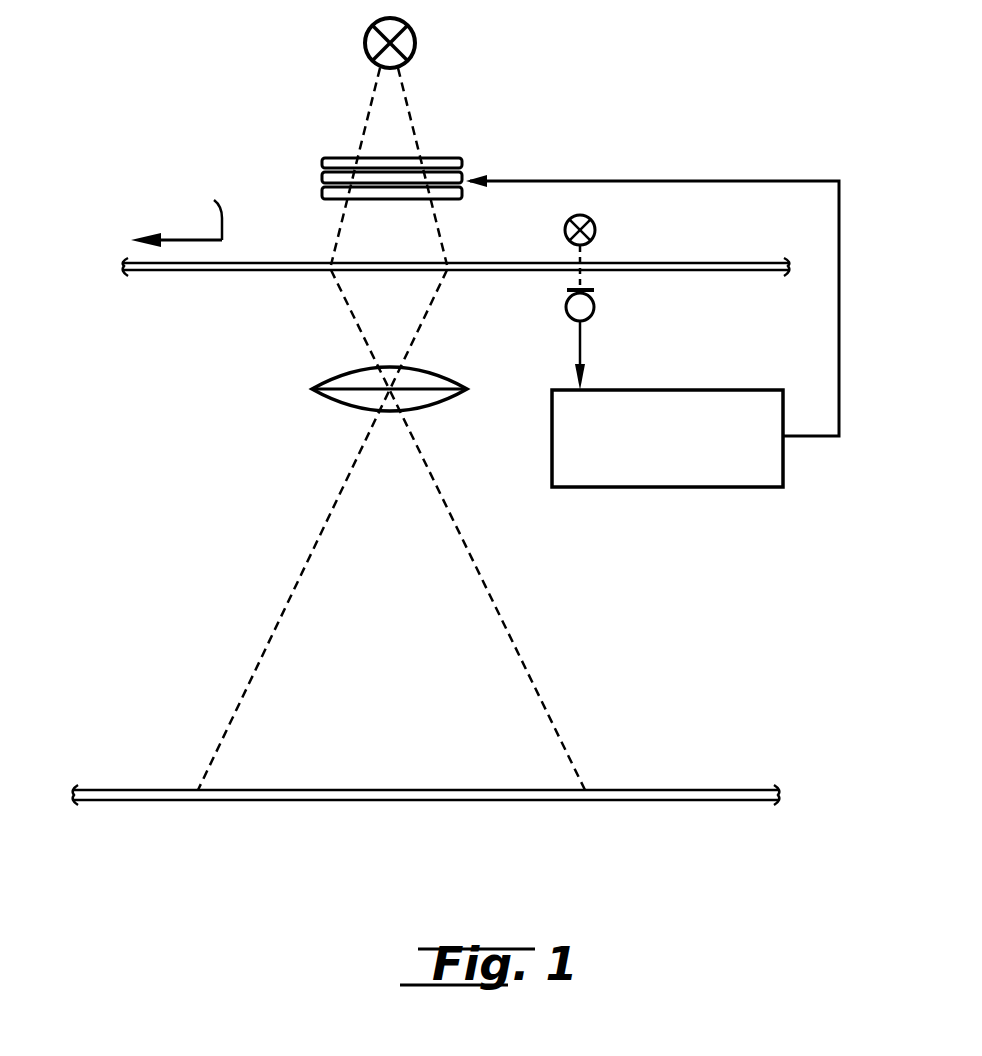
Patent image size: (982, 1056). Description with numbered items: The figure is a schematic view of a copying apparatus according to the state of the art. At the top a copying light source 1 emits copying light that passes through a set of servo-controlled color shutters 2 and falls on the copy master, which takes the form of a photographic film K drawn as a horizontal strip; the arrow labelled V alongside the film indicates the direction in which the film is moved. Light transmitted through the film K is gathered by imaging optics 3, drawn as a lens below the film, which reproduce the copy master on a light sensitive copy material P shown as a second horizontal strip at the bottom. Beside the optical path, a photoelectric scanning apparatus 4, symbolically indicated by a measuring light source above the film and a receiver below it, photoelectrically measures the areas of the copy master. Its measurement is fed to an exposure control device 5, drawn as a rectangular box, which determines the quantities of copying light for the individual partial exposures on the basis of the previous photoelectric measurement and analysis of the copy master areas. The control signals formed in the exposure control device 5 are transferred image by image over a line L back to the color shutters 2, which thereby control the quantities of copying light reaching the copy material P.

The copying light source 1 is at (404, 42).
The set of servo-controlled color shutters 2 is at (318, 203).
The imaging optics 3 is at (348, 380).
The photoelectric scanning apparatus 4 is at (603, 212).
The exposure control device 5 is at (698, 473).
The photographic film K is at (251, 268).
The line L is at (840, 327).
The light sensitive copy material P is at (413, 791).
The velocity direction V is at (176, 214).